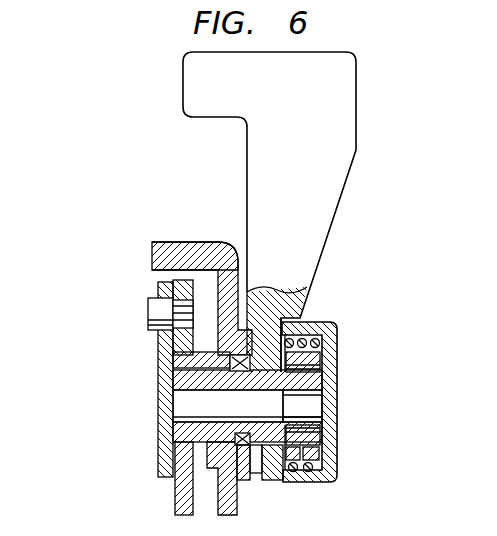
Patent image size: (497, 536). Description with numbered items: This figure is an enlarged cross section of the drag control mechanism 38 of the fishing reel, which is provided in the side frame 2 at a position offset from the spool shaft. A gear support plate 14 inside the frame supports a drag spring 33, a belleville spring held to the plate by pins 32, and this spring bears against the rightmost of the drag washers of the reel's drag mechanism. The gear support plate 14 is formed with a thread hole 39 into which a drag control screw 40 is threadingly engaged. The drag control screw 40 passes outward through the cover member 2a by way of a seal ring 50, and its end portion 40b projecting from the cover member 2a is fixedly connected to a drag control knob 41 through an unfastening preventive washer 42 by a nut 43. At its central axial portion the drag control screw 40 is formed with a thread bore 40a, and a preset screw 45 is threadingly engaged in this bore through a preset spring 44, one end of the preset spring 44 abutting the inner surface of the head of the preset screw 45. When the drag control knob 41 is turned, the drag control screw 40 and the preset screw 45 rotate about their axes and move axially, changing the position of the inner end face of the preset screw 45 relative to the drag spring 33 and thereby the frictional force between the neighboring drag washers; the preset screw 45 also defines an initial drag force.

The side frame 2 is at (158, 240).
The cover member 2a is at (207, 254).
The gear support plate 14 is at (185, 499).
The pin 32 is at (160, 317).
The drag spring 33 is at (165, 351).
The drag control mechanism 38 is at (341, 308).
The thread hole 39 is at (170, 429).
The drag control screw 40 is at (170, 381).
The thread bore 40a is at (276, 425).
The end portion of drag control screw 40b is at (270, 352).
The drag control knob 41 is at (345, 100).
The unfastening preventive washer 42 is at (334, 373).
The nut 43 is at (307, 358).
The preset spring 44 is at (312, 467).
The preset screw 45 is at (328, 402).
The seal ring 50 is at (240, 447).